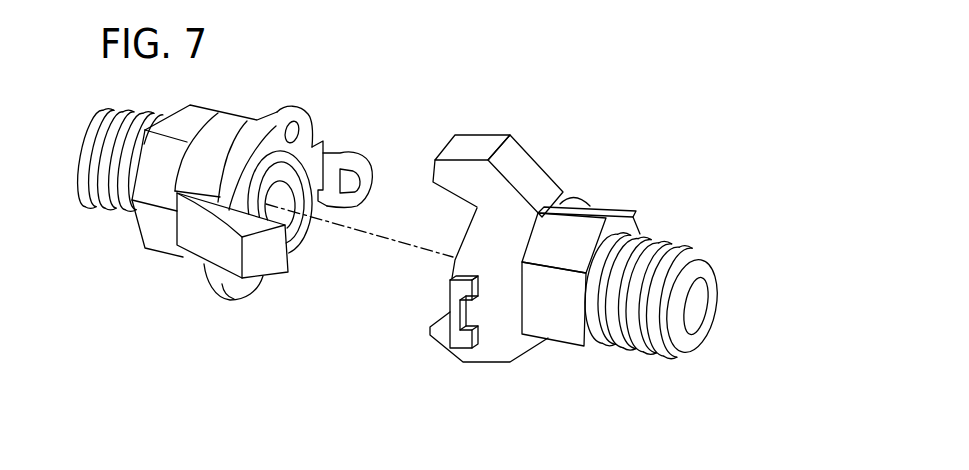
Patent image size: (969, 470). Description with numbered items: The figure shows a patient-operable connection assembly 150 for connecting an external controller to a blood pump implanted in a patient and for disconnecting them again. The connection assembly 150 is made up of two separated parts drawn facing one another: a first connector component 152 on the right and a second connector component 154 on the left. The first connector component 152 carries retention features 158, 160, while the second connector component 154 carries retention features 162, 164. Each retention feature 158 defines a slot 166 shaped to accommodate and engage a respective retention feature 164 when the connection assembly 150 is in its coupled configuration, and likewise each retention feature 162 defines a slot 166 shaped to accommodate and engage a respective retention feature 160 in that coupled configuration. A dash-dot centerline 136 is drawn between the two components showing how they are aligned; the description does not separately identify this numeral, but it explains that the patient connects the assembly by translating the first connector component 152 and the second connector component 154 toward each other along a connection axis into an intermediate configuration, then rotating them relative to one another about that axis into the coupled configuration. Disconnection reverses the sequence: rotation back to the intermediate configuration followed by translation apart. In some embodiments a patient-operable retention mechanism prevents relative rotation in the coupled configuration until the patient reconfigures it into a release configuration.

The patient-operable connection assembly 150 is at (533, 90).
The first connector component 152 is at (553, 370).
The second connector component 154 is at (155, 271).
The retention feature 158 is at (512, 134).
The retention feature 160 is at (596, 190).
The retention feature 162 is at (336, 153).
The retention feature 164 is at (281, 111).
The slot 166 is at (344, 137).
The central axis 136 is at (367, 234).